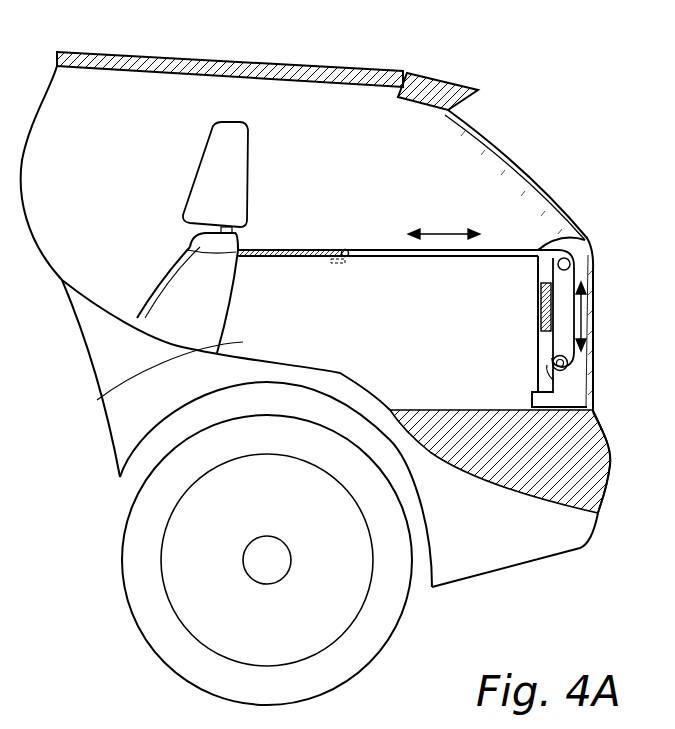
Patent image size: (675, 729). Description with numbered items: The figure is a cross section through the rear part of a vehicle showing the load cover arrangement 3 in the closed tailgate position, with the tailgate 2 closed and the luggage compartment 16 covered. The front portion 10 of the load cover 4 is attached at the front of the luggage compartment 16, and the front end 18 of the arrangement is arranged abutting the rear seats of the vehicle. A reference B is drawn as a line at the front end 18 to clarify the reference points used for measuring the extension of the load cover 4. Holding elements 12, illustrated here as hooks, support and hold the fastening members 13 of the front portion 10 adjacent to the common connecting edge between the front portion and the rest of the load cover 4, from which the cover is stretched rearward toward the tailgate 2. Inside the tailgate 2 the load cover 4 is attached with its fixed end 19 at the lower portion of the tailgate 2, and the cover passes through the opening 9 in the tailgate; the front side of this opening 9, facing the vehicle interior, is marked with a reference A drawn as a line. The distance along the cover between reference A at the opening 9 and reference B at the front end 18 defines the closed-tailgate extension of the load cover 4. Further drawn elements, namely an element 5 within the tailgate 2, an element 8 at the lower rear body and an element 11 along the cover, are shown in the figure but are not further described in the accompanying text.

The tailgate 2 is at (481, 97).
The load cover arrangement 3 is at (350, 100).
The load cover 4 is at (434, 284).
The roller 5 is at (568, 360).
The vehicle body sill 8 is at (562, 398).
The opening in the tailgate 9 is at (527, 235).
The front portion 10 is at (293, 192).
The guide rail 11 is at (292, 257).
The holding elements 12 is at (350, 265).
The fastening members 13 is at (345, 250).
The luggage compartment 16 is at (97, 400).
The front end 18 is at (186, 240).
The fixed end 19 is at (543, 373).
The reference A is at (540, 240).
The reference B is at (238, 232).